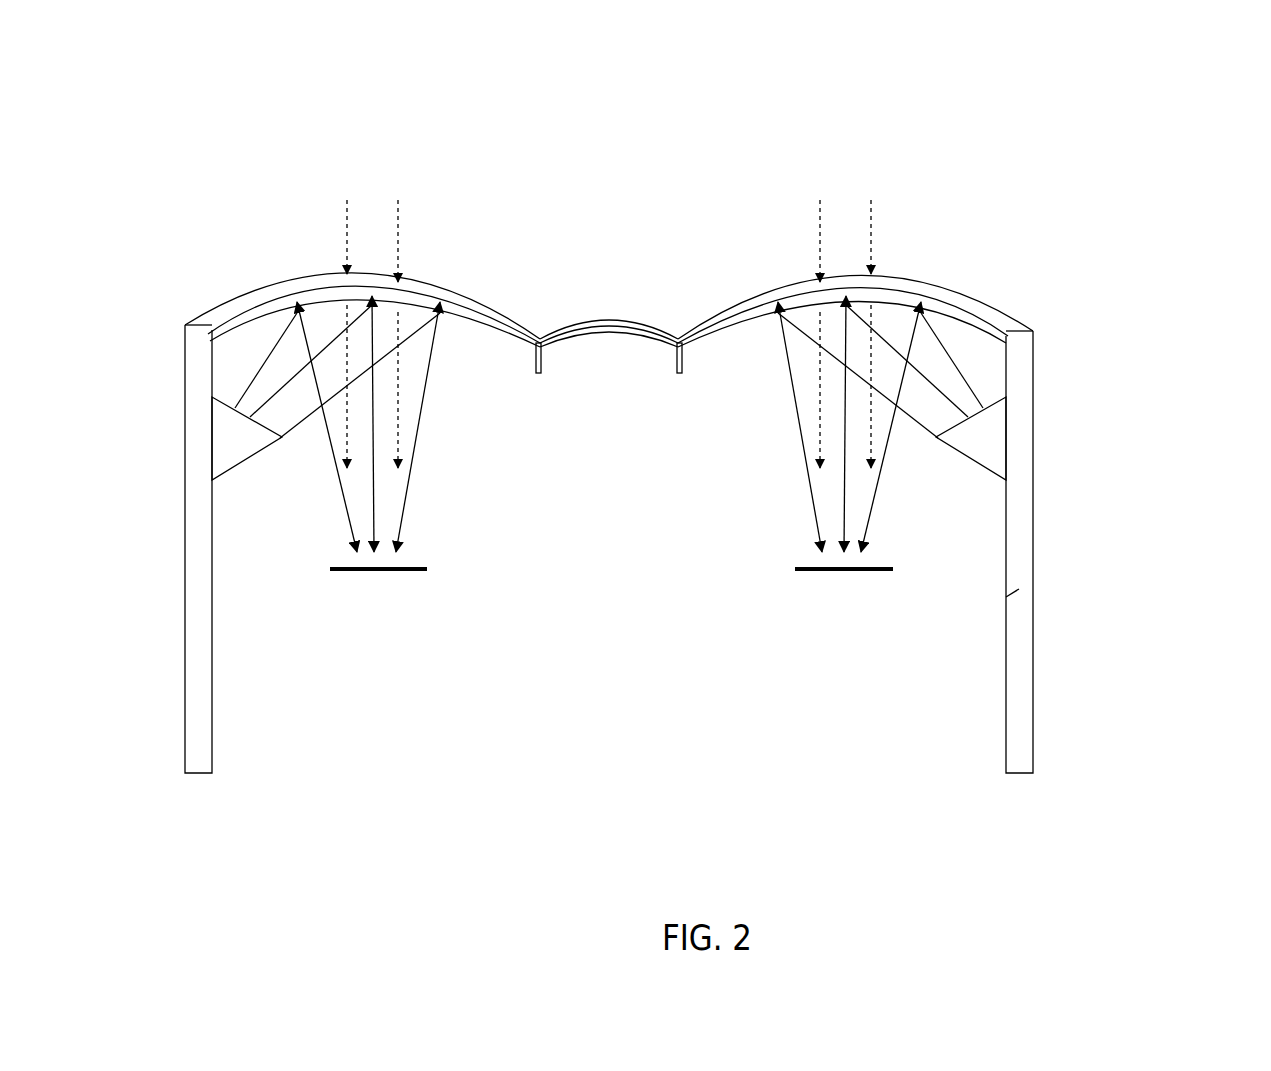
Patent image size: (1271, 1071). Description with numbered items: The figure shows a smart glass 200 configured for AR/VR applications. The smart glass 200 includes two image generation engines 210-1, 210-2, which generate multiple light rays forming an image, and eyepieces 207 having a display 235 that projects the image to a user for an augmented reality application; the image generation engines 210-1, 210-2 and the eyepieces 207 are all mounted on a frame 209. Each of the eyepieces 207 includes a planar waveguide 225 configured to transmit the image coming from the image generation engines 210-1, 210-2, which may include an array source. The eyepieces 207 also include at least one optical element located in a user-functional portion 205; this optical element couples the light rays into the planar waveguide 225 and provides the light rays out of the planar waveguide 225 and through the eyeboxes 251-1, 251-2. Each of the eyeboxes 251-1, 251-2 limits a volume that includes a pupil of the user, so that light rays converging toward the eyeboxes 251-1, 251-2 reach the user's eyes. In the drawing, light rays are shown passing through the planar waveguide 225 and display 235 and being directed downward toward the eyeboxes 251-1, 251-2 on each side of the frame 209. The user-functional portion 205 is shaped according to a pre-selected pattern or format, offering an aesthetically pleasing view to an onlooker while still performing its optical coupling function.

The smart glass 200 is at (299, 70).
The eyepieces 207 is at (771, 281).
The planar waveguide 225 is at (957, 296).
The display 235 is at (985, 333).
The frame 209 is at (668, 341).
The image generation engine 210-1 is at (207, 427).
The image generation engine 210-2 is at (983, 440).
The user-functional portion 205 is at (395, 312).
The eyebox 251-1 is at (410, 574).
The eyebox 251-2 is at (846, 574).